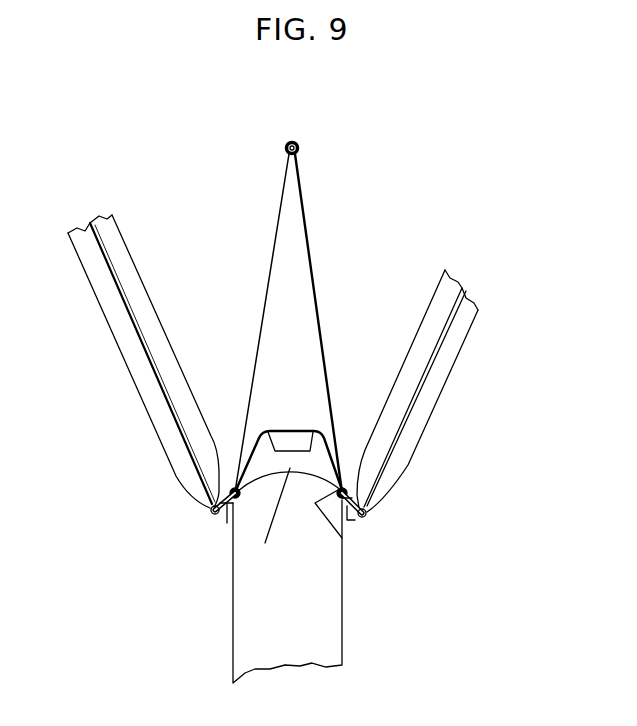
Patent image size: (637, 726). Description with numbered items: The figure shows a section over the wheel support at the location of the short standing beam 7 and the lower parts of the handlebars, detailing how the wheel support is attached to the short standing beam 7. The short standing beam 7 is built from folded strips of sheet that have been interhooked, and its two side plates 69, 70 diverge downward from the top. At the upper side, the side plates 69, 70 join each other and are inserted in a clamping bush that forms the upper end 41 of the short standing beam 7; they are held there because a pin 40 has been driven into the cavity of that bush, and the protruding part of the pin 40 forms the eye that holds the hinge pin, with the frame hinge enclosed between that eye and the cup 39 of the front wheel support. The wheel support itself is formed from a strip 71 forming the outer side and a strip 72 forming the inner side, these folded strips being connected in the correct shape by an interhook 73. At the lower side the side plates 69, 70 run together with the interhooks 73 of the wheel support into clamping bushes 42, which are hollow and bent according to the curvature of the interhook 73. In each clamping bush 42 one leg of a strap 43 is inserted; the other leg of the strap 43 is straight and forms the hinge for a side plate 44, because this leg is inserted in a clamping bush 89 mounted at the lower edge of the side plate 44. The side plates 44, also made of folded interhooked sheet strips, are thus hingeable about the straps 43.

The short standing beam 7 is at (322, 323).
The cup 39 is at (282, 432).
The pin 40 is at (299, 145).
The upper end 41 is at (284, 146).
The clamping bush 42 is at (357, 493).
The strap 43 is at (227, 523).
The side plate 44 is at (122, 333).
The side plate 69 is at (265, 297).
The side plate 70 is at (314, 262).
The strip 71 is at (320, 437).
The strip 72 is at (265, 543).
The interhook 73 is at (342, 538).
The clamping bush 89 is at (208, 510).